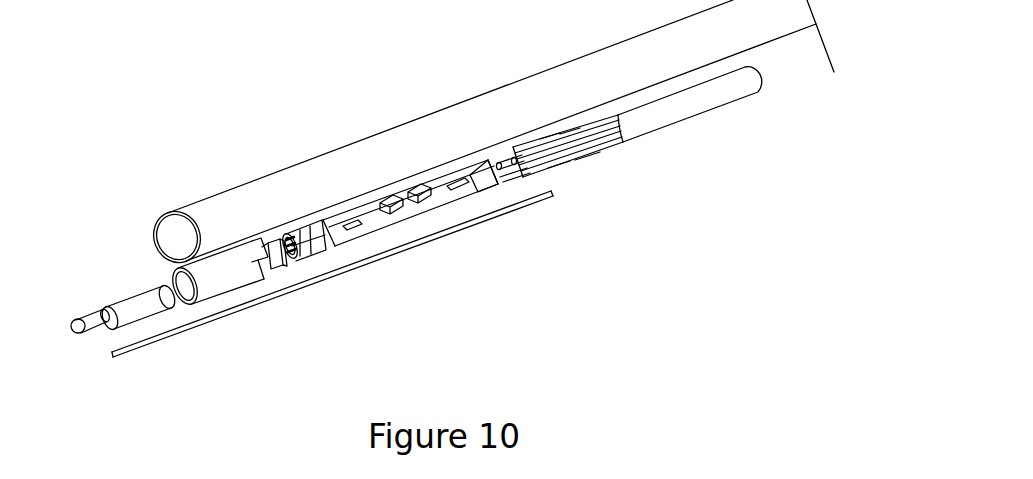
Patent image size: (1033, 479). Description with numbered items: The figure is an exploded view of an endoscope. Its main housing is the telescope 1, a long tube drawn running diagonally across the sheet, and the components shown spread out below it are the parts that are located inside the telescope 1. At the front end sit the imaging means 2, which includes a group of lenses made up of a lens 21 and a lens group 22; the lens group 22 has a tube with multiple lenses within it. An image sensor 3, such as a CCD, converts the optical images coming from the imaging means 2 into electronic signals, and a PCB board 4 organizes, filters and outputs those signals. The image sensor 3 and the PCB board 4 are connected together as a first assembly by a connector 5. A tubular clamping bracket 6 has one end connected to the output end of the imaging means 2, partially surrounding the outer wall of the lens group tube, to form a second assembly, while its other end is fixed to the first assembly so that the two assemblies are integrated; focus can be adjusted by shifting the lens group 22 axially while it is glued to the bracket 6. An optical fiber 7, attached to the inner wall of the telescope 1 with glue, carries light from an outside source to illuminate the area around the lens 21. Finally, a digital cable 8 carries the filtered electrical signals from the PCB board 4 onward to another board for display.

The telescope 1 is at (268, 203).
The imaging means 2 is at (103, 222).
The lens 21 is at (72, 313).
The lens group 22 is at (137, 306).
The image sensor 3 is at (283, 266).
The PCB board 4 is at (378, 226).
The connector 5 is at (318, 251).
The clamping bracket 6 is at (228, 276).
The optical fiber 7 is at (152, 342).
The digital cable 8 is at (553, 172).